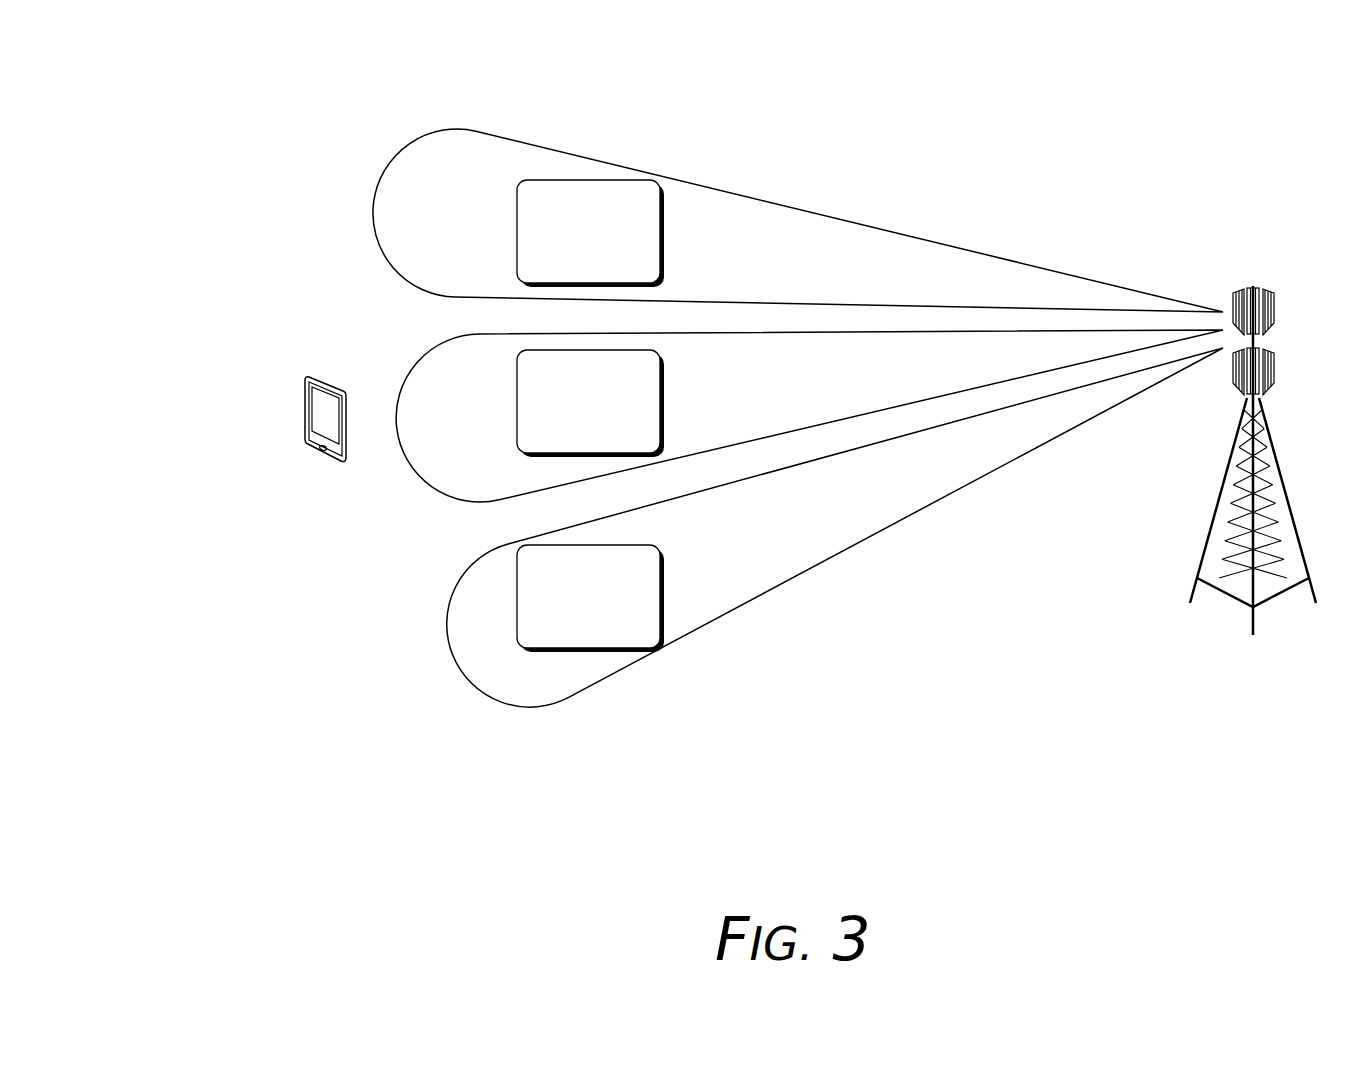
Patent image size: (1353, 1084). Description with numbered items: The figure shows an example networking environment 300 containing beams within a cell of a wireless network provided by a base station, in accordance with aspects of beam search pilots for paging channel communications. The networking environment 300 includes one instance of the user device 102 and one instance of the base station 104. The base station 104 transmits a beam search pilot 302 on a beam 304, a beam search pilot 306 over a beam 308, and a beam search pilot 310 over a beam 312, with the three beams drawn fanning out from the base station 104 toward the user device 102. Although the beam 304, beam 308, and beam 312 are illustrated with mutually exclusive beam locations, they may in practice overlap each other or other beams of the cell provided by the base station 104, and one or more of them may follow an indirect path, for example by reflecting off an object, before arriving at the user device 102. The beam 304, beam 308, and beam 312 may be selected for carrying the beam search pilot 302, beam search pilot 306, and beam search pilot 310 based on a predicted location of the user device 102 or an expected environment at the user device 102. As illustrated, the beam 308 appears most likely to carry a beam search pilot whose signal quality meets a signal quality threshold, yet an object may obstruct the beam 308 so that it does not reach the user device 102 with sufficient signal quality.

The networking environment 300 is at (180, 85).
The beam search pilot 302 is at (590, 233).
The beam 304 is at (1032, 290).
The beam search pilot 306 is at (590, 403).
The beam 308 is at (1103, 345).
The beam search pilot 310 is at (590, 598).
The beam 312 is at (1058, 415).
The user device 102 is at (326, 455).
The base station 104 is at (1253, 497).